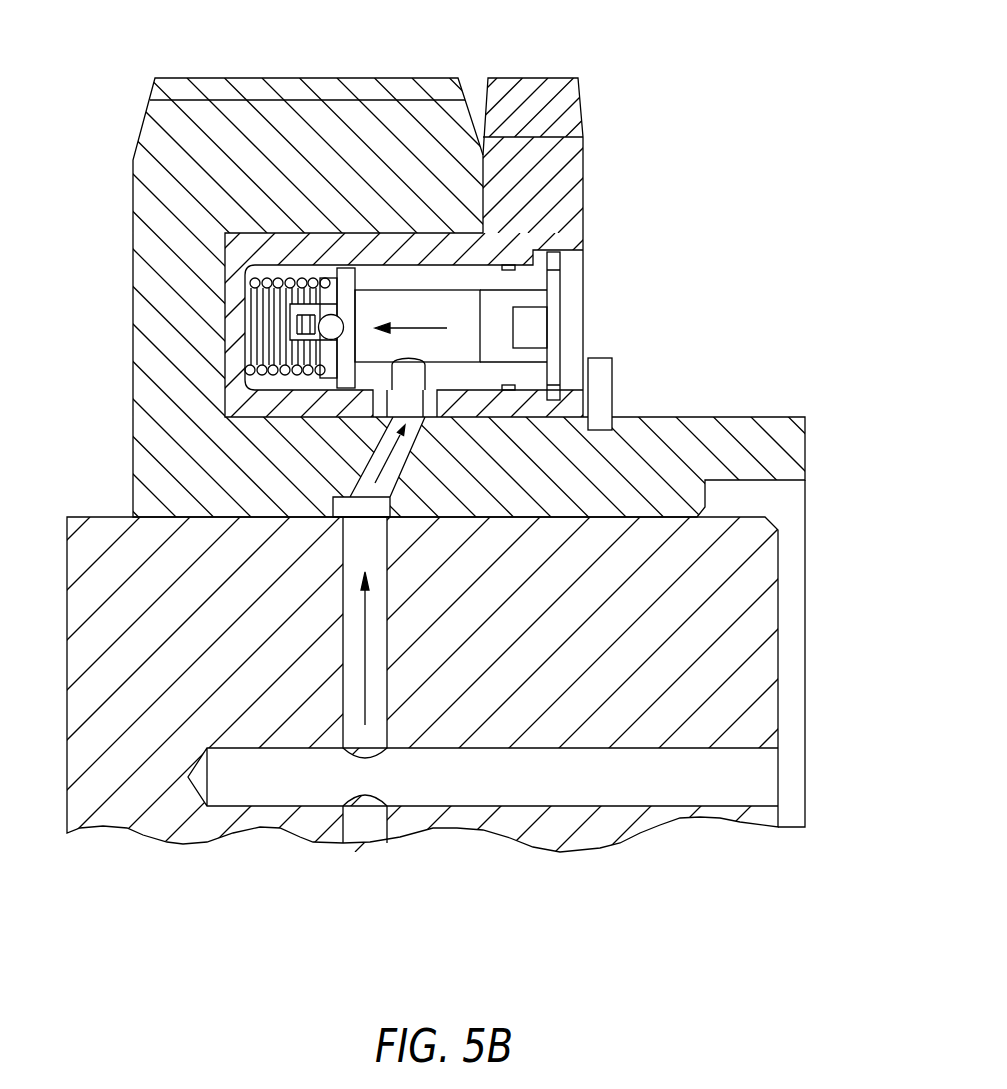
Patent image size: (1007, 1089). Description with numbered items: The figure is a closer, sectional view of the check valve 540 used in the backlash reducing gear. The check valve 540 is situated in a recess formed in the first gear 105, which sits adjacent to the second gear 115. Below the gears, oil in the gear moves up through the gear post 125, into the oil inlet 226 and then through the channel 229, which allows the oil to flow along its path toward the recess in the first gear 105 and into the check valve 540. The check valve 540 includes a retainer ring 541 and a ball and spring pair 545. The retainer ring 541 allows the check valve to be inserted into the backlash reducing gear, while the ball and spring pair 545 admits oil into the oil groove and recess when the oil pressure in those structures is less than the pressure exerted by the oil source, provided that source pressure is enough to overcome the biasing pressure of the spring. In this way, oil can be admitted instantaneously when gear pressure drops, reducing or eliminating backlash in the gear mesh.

The first gear 105 is at (403, 150).
The second gear 115 is at (538, 178).
The gear post 125 is at (455, 722).
The oil inlet 226 is at (757, 731).
The channel 229 is at (532, 777).
The check valve 540 is at (627, 320).
The retainer ring 541 is at (572, 287).
The ball and spring pair 545 is at (300, 328).